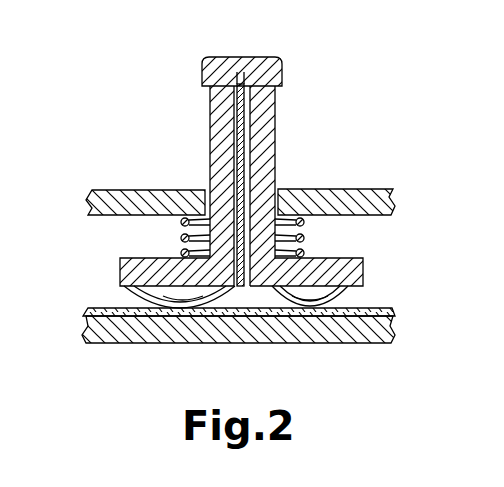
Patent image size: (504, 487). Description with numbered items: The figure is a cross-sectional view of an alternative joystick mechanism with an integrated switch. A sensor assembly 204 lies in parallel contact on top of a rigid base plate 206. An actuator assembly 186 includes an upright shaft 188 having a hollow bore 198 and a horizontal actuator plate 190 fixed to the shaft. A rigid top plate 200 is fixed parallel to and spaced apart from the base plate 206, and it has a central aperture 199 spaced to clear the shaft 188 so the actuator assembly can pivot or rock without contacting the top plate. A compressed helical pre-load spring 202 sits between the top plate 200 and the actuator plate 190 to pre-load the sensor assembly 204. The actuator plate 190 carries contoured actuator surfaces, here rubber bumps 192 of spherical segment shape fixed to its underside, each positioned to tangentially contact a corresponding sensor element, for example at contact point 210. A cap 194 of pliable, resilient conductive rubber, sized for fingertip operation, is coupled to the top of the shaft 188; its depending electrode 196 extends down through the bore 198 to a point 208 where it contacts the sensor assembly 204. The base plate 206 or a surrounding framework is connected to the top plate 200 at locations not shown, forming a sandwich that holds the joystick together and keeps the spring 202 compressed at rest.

The actuator assembly 186 is at (293, 122).
The upright shaft 188 is at (276, 153).
The actuator plate 190 is at (346, 257).
The rubber bumps 192 is at (355, 296).
The cap 194 is at (256, 57).
The electrode 196 is at (237, 104).
The hollow bore 198 is at (222, 128).
The central aperture 199 is at (208, 187).
The top plate 200 is at (105, 188).
The pre-load spring 202 is at (181, 238).
The sensor assembly 204 is at (100, 308).
The base plate 206 is at (185, 343).
The point 208 is at (246, 310).
The contact point 210 is at (309, 316).